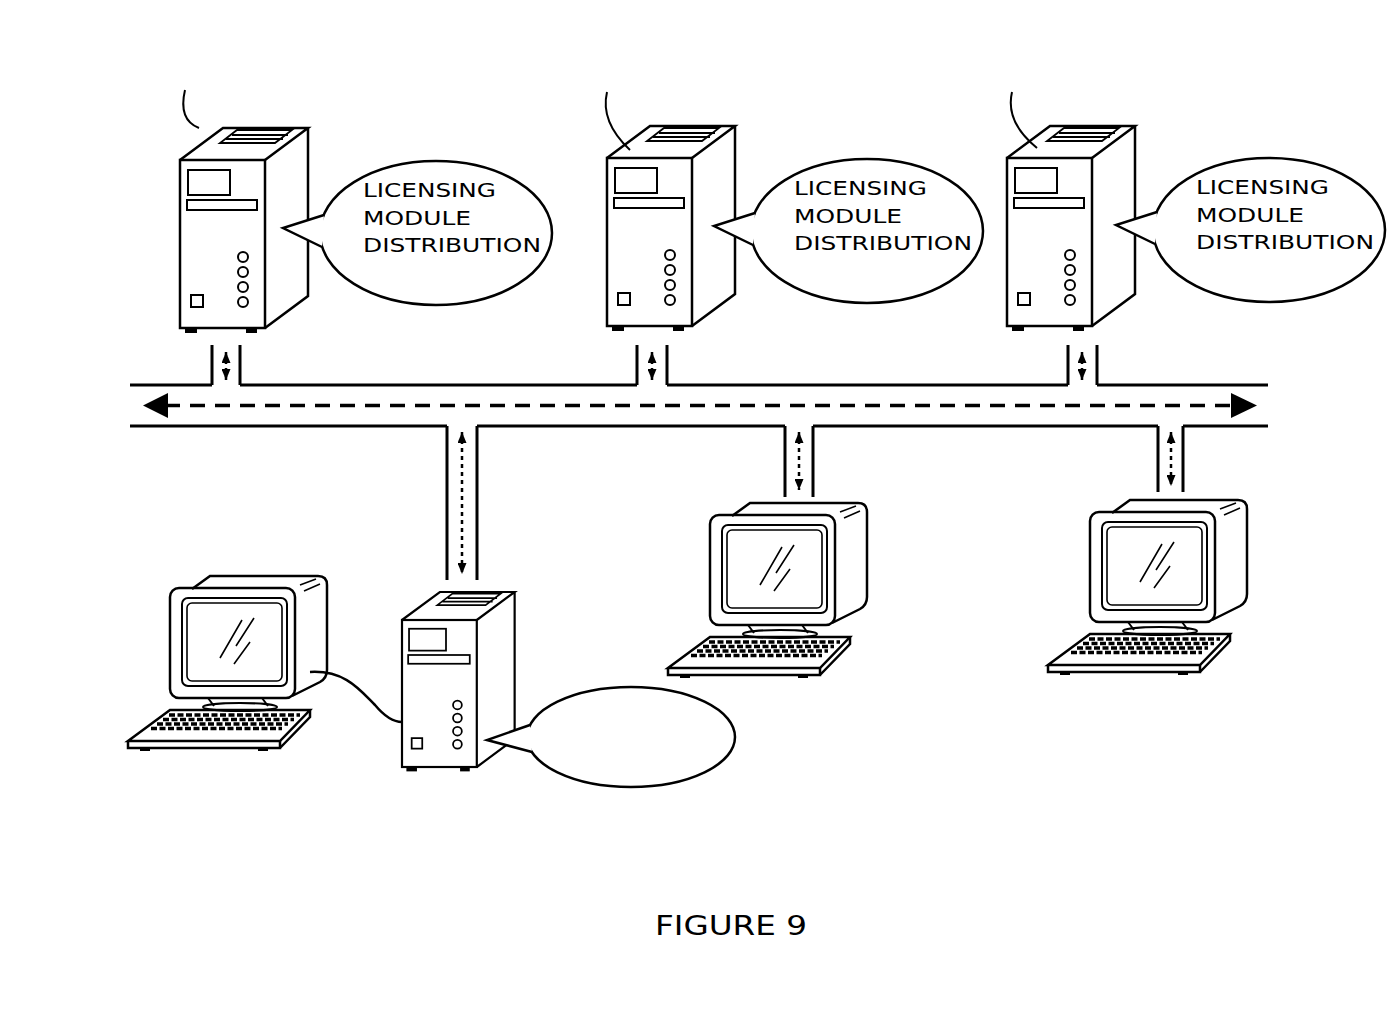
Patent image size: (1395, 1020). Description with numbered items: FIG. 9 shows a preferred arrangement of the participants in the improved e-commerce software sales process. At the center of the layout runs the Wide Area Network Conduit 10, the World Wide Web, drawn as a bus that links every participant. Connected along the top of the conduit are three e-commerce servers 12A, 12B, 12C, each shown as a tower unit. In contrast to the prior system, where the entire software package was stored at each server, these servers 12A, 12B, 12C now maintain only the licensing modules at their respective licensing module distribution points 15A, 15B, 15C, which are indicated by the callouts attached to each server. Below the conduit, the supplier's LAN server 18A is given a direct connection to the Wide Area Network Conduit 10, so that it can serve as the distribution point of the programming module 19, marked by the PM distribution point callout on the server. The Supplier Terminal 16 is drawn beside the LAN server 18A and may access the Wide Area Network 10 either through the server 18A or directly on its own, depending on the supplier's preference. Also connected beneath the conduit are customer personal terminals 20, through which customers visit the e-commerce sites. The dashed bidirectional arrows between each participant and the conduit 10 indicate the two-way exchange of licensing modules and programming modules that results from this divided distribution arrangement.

The wide area network conduit 10 is at (1208, 381).
The e-commerce server 12A is at (298, 147).
The e-commerce server 12B is at (723, 148).
The e-commerce server 12C is at (1125, 148).
The licensing module distribution point 15A is at (437, 117).
The licensing module distribution point 15B is at (853, 163).
The licensing module distribution point 15C is at (1245, 163).
The supplier terminal 16 is at (203, 655).
The LAN server 18A is at (442, 757).
The programming module distribution point 19 is at (508, 617).
The personal terminal 20 is at (870, 662).